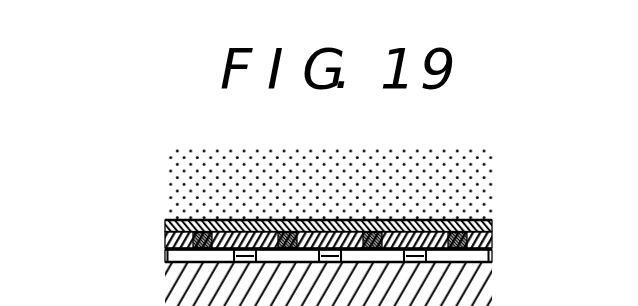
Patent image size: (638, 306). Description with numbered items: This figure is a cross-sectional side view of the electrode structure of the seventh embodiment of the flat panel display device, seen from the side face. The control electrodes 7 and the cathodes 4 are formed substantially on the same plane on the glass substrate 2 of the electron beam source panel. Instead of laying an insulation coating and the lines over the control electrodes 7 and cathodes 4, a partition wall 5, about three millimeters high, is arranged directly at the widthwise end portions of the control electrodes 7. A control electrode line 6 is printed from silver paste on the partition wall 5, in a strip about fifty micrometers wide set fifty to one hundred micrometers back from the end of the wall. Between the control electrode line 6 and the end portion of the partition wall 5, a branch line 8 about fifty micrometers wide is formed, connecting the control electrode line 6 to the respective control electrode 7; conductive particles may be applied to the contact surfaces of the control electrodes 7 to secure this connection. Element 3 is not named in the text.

The substrate 2 is at (176, 275).
The lower electrode 3 is at (355, 221).
The cathode 4 is at (327, 221).
The partition wall 5 is at (188, 172).
The control electrode line 6 is at (493, 224).
The control electrode 7 is at (493, 255).
The branch line 8 is at (172, 240).